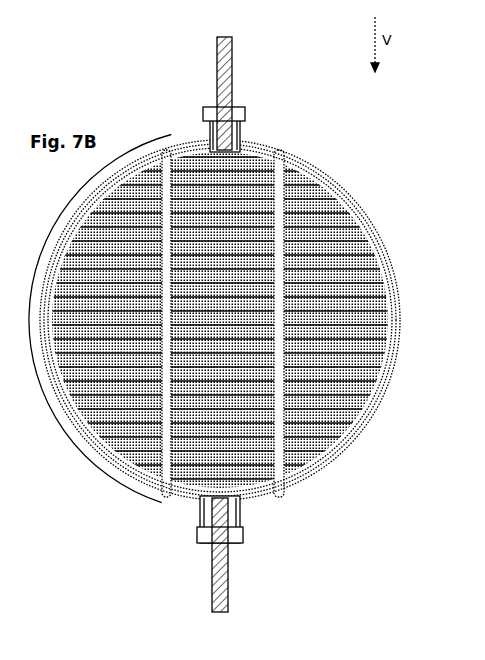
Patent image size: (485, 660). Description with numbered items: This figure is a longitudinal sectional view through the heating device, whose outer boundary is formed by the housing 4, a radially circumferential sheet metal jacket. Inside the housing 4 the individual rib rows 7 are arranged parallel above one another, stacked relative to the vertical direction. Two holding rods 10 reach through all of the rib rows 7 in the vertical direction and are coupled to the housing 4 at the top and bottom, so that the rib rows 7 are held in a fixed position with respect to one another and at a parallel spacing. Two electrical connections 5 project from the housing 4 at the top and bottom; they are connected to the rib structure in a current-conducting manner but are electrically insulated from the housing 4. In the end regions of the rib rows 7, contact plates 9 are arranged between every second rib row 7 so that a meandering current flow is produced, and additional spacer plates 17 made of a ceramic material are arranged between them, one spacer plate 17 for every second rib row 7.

The housing 4 is at (360, 423).
The electrical connection 5 is at (250, 613).
The rib row 7 is at (393, 363).
The contact plate 9 is at (387, 258).
The holding rod 10 is at (313, 532).
The spacer plate 17 is at (390, 257).